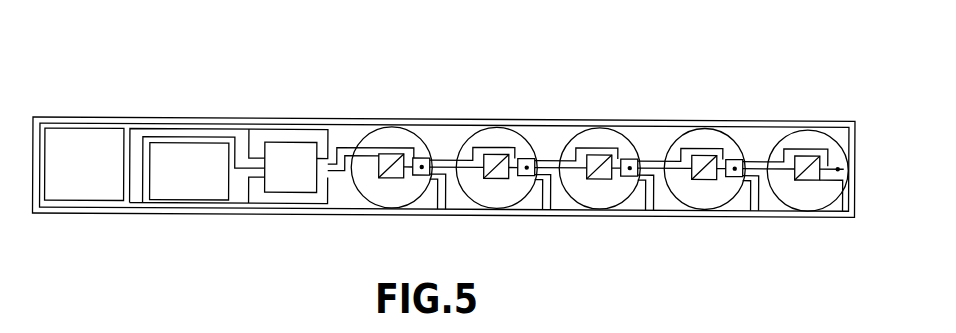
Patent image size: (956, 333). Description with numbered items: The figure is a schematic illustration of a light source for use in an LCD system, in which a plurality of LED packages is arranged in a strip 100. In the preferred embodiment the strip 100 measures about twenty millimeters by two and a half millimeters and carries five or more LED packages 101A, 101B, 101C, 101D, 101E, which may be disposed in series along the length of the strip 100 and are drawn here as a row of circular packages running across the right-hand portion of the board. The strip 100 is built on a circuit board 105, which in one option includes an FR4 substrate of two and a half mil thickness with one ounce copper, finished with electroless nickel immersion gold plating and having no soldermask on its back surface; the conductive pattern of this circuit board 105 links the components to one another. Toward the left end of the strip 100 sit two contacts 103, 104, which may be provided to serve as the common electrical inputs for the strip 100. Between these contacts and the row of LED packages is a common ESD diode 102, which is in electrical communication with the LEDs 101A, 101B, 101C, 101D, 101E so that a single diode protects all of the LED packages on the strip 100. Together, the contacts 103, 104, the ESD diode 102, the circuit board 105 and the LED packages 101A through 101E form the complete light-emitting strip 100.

The strip 100 is at (219, 45).
The LED package 101A is at (392, 179).
The LED package 101B is at (496, 180).
The LED package 101C is at (599, 181).
The LED package 101D is at (703, 182).
The LED package 101E is at (806, 183).
The common ESD diode 102 is at (297, 148).
The contact 103 is at (72, 143).
The contact 104 is at (183, 150).
The circuit board 105 is at (242, 188).